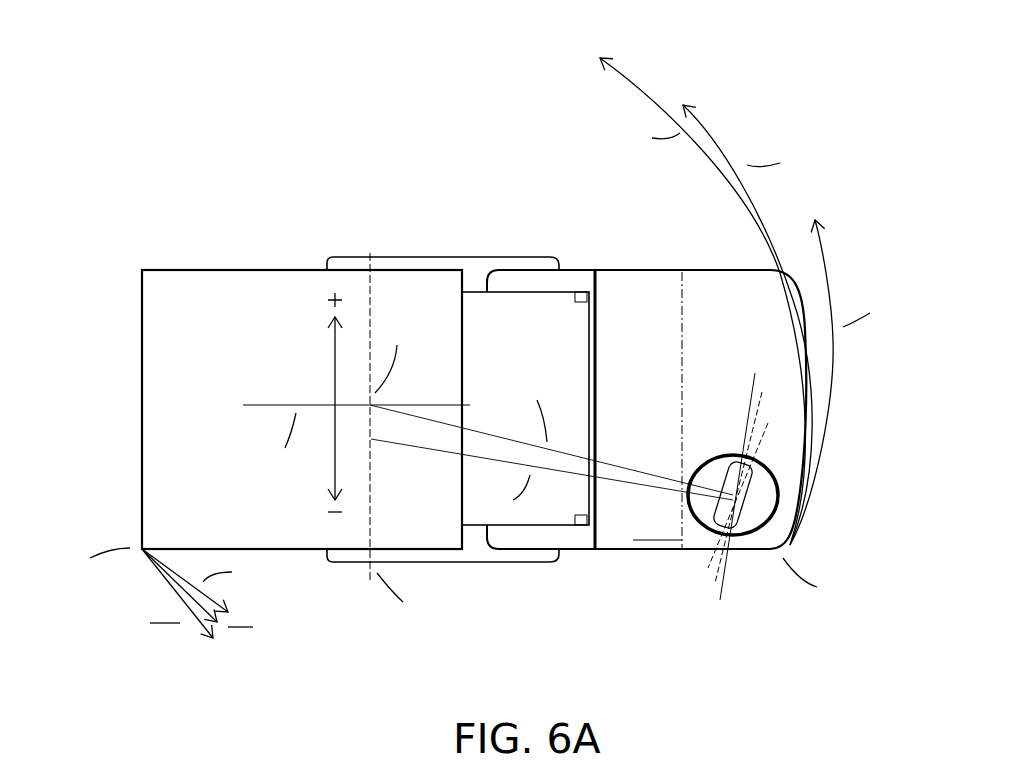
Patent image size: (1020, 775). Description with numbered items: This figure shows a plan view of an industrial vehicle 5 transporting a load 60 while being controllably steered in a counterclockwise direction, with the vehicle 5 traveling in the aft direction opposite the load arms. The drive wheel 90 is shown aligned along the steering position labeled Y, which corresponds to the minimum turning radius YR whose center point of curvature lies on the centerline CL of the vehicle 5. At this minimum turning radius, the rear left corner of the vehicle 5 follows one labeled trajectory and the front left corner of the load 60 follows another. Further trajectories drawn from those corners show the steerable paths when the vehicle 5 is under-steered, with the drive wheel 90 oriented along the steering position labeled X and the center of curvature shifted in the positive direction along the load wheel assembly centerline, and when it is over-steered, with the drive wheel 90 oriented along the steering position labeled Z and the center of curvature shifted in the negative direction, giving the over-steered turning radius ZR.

The vehicle 5 is at (532, 237).
The load 60 is at (211, 327).
The drive wheel 90 is at (715, 485).